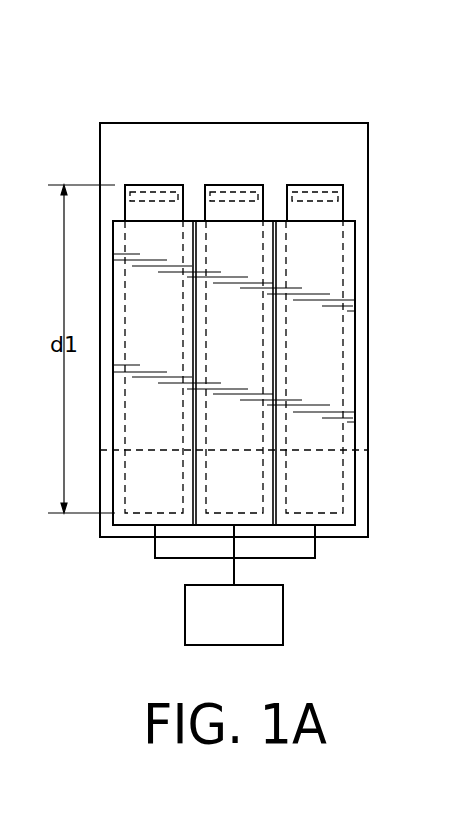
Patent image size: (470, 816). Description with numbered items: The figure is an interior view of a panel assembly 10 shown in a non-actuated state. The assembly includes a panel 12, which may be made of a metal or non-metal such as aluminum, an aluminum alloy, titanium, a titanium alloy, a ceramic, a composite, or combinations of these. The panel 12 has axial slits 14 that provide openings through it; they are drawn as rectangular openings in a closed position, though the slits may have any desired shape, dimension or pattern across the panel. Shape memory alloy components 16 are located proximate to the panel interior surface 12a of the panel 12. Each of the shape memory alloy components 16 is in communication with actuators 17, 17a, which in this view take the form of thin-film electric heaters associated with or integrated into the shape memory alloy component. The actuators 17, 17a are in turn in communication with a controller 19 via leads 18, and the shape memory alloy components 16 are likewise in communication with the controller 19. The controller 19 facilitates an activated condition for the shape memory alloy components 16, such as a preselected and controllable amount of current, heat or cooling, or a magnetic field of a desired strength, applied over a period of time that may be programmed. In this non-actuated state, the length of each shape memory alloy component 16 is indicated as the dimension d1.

The panel assembly 10 is at (113, 103).
The panel 12 is at (263, 123).
The panel interior surface 12a is at (115, 148).
The axial slits 14 is at (228, 188).
The shape memory alloy components 16 is at (318, 210).
The actuator 17 is at (326, 450).
The actuator 17a is at (347, 362).
The leads 18 is at (233, 547).
The controller 19 is at (252, 627).